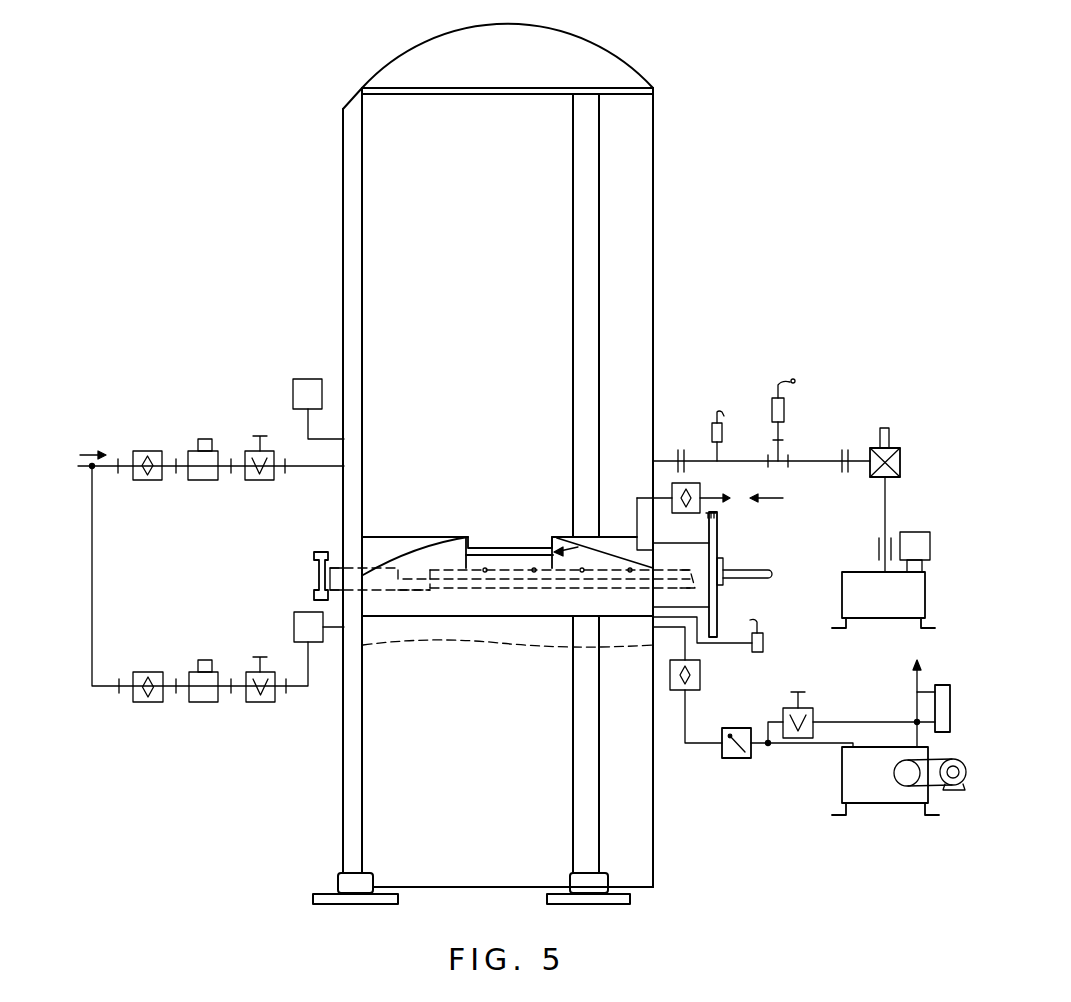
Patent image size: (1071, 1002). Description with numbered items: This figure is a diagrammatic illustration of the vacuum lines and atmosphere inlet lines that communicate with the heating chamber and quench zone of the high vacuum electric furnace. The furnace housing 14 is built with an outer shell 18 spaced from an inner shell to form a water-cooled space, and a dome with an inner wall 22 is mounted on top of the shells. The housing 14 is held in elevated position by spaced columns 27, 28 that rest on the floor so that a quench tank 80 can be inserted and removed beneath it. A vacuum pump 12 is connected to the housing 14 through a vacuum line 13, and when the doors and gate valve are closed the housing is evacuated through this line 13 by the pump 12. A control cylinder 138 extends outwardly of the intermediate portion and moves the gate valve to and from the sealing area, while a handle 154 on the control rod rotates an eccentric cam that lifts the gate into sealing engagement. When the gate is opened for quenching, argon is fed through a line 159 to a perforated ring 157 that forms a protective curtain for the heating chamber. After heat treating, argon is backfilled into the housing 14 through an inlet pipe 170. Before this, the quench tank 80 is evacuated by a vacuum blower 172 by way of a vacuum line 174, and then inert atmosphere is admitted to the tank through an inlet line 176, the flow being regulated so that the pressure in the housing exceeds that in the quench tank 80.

The vacuum pump 12 is at (840, 597).
The vacuum line 13 is at (807, 460).
The housing 14 is at (656, 221).
The outer shell 18 is at (654, 287).
The inner wall 22 is at (597, 47).
The column 27 is at (585, 773).
The column 28 is at (352, 762).
The quench tank 80 is at (660, 808).
The control cylinder 138 is at (747, 568).
The handle 154 is at (317, 568).
The perforated ring 157 is at (516, 548).
The line 159 is at (712, 501).
The inlet pipe 170 is at (300, 467).
The vacuum blower 172 is at (907, 805).
The vacuum line 174 is at (687, 728).
The inlet line 176 is at (93, 612).